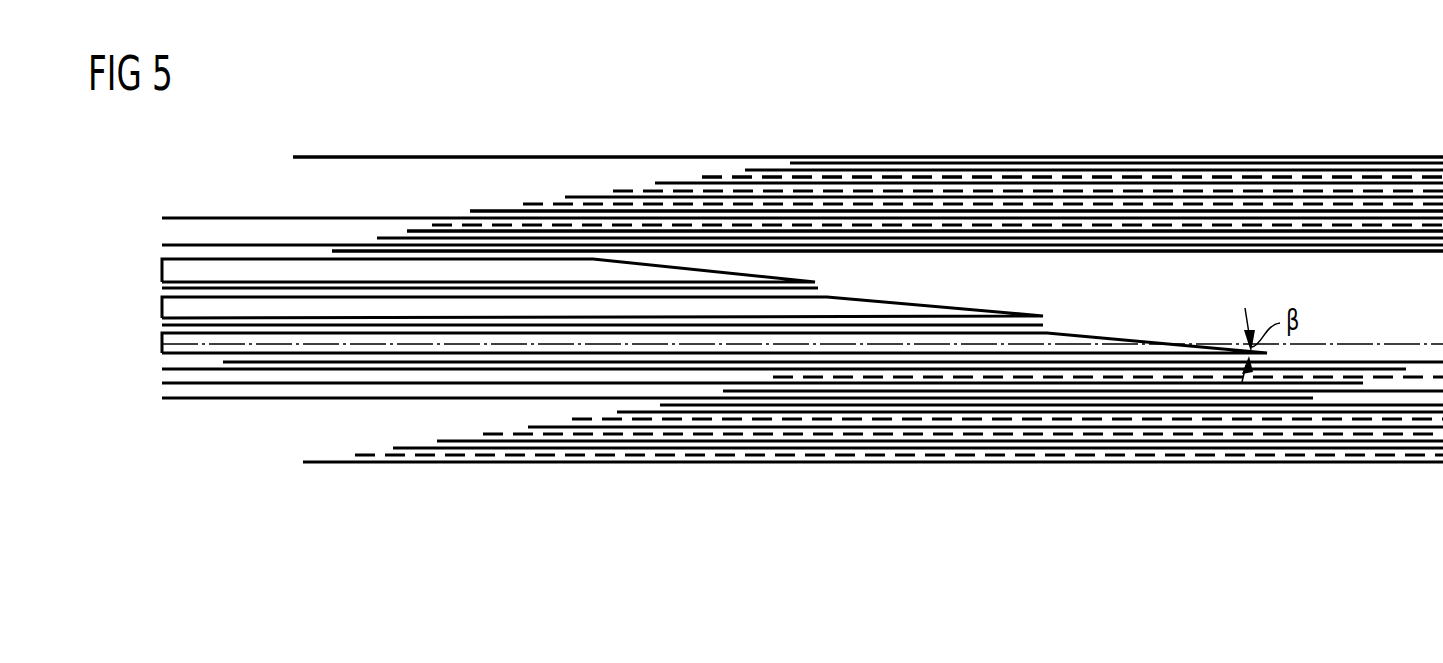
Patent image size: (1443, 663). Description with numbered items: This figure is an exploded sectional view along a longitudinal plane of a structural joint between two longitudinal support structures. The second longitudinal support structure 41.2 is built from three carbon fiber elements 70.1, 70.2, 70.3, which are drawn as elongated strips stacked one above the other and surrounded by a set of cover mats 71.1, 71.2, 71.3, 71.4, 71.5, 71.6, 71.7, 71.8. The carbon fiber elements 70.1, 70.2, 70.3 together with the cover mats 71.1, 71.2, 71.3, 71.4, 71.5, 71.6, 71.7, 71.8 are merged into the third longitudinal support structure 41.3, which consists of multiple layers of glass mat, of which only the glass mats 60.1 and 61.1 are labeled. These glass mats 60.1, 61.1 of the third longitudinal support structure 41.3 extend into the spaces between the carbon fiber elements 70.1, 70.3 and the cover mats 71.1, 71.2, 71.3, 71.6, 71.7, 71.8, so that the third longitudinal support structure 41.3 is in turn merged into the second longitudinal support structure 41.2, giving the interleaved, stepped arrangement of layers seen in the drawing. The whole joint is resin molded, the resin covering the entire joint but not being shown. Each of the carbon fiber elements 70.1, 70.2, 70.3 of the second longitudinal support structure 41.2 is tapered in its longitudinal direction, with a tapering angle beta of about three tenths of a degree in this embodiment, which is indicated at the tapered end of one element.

The second longitudinal support structure 41.2 is at (165, 200).
The third longitudinal support structure 41.3 is at (1198, 487).
The glass mat 60.1 is at (1142, 155).
The glass mat 61.1 is at (1250, 177).
The carbon fiber element 70.1 is at (175, 272).
The carbon fiber element 70.2 is at (175, 308).
The carbon fiber element 70.3 is at (175, 345).
The cover mat 71.1 is at (332, 245).
The cover mat 71.2 is at (408, 229).
The cover mat 71.3 is at (483, 198).
The cover mat 71.4 is at (557, 287).
The cover mat 71.5 is at (378, 326).
The cover mat 71.6 is at (185, 370).
The cover mat 71.7 is at (247, 384).
The cover mat 71.8 is at (332, 399).